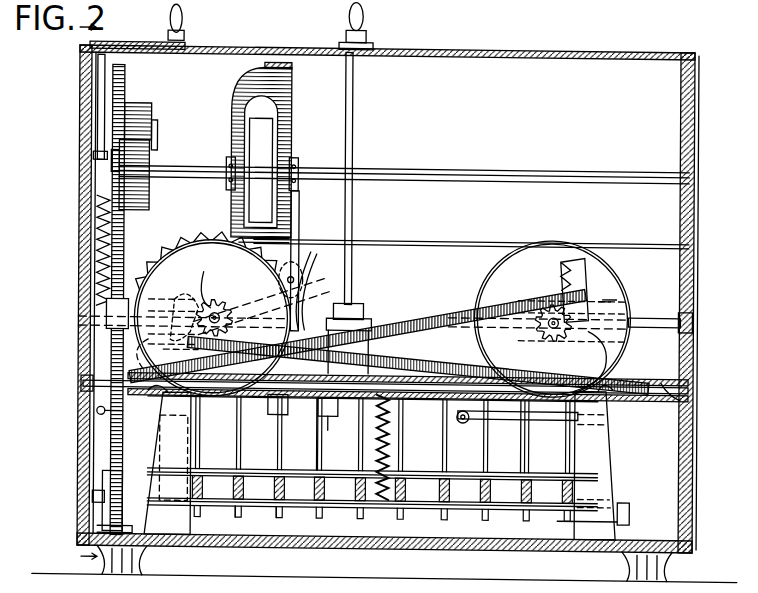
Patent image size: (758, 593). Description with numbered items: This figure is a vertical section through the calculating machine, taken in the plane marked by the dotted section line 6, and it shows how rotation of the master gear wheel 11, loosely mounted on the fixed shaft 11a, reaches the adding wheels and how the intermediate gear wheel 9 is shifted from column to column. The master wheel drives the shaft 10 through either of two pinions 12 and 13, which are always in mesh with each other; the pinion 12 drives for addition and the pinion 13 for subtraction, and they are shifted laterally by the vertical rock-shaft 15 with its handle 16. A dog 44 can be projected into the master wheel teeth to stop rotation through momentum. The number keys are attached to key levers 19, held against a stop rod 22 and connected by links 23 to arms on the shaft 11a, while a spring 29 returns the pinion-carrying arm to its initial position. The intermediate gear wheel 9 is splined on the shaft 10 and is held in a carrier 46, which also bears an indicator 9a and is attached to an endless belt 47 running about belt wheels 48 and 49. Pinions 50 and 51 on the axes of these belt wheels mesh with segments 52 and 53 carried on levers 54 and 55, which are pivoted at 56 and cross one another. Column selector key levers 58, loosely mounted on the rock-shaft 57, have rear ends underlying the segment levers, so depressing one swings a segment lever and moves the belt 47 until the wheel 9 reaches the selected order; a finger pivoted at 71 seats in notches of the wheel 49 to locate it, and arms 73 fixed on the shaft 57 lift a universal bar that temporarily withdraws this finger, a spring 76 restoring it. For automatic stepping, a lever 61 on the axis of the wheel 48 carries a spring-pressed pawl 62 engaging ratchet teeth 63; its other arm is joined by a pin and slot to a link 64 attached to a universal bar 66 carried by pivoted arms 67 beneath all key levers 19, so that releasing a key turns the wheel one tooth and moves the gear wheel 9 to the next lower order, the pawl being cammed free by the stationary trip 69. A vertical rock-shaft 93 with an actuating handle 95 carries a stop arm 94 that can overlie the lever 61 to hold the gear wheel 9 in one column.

The section line 6 is at (80, 295).
The handle 16 is at (170, 7).
The indicator 9a is at (282, 60).
The actuating handle 95 is at (366, 19).
The vertical rock-shaft 15 is at (98, 90).
The pinion 13 is at (146, 102).
The intermediate gear wheel 9 is at (262, 128).
The vertical rock-shaft 93 is at (353, 122).
The shaft 10 is at (480, 165).
The pinion 12 is at (145, 197).
The ratchet teeth 63 is at (204, 238).
The carrier 46 is at (296, 215).
The stationary trip 69 is at (306, 287).
The endless belt 47 is at (421, 237).
The spring 29 is at (97, 250).
The master gear wheel 11 is at (150, 237).
The pinion 50 is at (206, 272).
The belt wheel 48 is at (217, 301).
The segment 52 is at (190, 298).
The spring-pressed pawl 62 is at (286, 297).
The lever 61 is at (335, 287).
The stop arm 94 is at (358, 302).
The segment lever 55 is at (446, 308).
The segment 53 is at (560, 264).
The belt wheel 49 is at (590, 261).
The fixed shaft 11a is at (660, 311).
The pivot 56 is at (125, 375).
The pinion 51 is at (540, 331).
The segment lever 54 is at (600, 372).
The rock-shaft 57 is at (680, 393).
The link 64 is at (160, 414).
The dog 44 is at (105, 478).
The arm 73 is at (275, 410).
The link 23 is at (282, 443).
The column selector key lever 58 is at (338, 415).
The spring 76 is at (396, 428).
The stop rod 22 is at (416, 469).
The pivot 71 is at (465, 420).
The pivoted arm 67 is at (633, 505).
The key lever 19 is at (240, 477).
The universal bar 66 is at (478, 507).